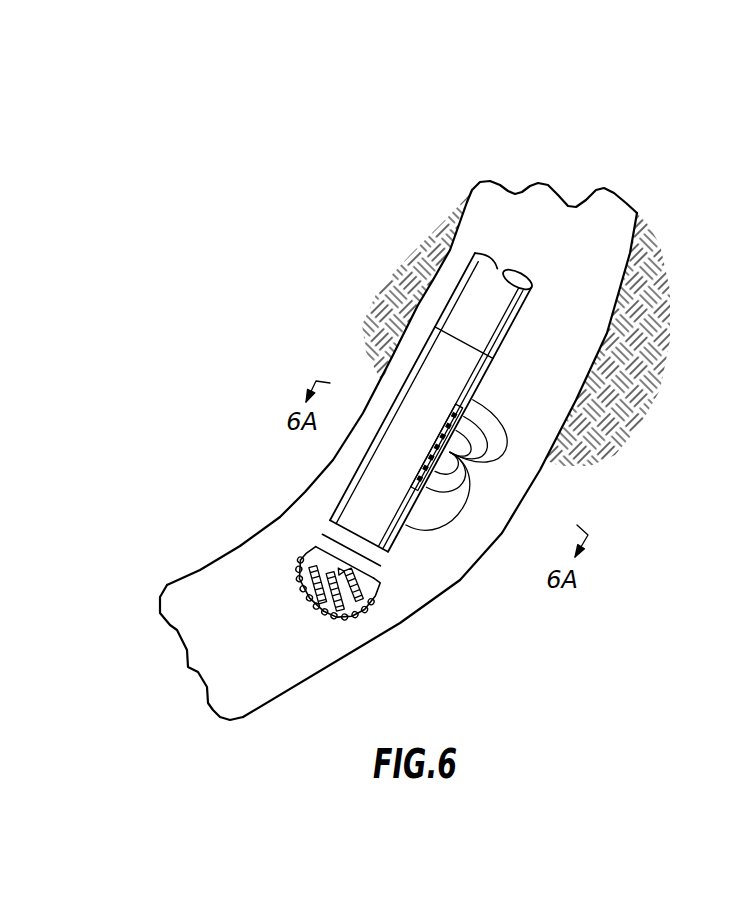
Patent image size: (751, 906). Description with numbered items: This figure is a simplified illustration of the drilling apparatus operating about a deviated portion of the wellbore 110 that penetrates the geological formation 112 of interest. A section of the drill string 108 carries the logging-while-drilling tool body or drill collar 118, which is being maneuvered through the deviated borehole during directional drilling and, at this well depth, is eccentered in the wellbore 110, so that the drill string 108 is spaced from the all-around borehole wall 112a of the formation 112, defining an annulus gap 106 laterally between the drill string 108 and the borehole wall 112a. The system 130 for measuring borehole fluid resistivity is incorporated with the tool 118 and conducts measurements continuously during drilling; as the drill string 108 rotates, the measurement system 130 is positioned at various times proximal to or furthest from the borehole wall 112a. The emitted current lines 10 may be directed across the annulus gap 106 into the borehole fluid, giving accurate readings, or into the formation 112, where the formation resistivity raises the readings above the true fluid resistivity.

The wellbore 110 is at (575, 233).
The geological formation 112 is at (303, 314).
The borehole wall 112a is at (282, 687).
The drill string 108 is at (518, 323).
The measurement system 130 is at (437, 433).
The emitted current lines 10 is at (452, 453).
The annulus gap 106 is at (515, 432).
The drill collar 118 is at (490, 368).